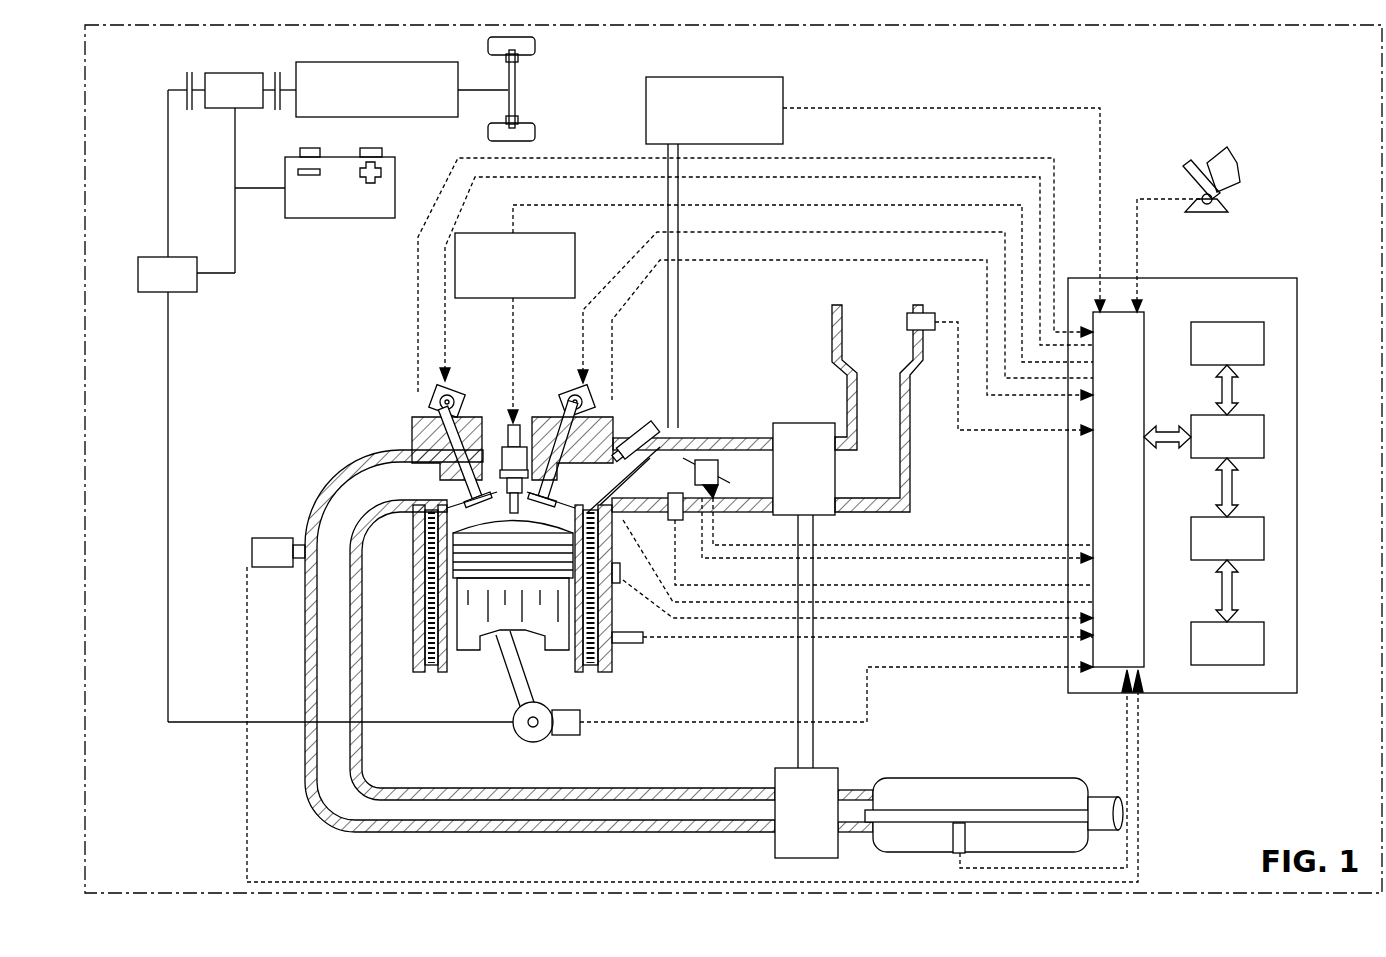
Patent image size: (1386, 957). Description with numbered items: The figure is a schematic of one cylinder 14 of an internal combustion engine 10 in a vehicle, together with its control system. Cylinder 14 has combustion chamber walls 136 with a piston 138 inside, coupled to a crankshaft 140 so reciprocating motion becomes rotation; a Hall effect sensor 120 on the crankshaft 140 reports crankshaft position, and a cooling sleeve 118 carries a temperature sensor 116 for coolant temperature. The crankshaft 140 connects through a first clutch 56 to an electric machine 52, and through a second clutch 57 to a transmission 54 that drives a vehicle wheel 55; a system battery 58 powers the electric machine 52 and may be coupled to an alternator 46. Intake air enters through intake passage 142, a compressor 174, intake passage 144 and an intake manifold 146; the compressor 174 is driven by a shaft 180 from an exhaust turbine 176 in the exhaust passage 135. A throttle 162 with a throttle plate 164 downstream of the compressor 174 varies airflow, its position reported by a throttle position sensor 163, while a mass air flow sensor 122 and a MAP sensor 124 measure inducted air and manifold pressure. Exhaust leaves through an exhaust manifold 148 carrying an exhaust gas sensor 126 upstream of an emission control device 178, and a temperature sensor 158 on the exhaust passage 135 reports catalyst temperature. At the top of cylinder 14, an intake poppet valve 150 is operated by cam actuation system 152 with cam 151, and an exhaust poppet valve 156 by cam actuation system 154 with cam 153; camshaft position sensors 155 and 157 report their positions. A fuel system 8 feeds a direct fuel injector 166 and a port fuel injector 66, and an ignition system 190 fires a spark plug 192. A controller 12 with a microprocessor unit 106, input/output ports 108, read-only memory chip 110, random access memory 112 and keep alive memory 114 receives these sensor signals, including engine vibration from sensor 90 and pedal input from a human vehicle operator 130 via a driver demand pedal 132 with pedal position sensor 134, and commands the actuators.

The fuel system 8 is at (760, 77).
The internal combustion engine 10 is at (338, 371).
The controller 12 is at (1297, 282).
The cylinder 14 is at (420, 535).
The alternator 46 is at (140, 292).
The electric machine 52 is at (222, 73).
The transmission 54 is at (440, 117).
The vehicle wheel 55 is at (488, 46).
The first clutch 56 is at (187, 76).
The second clutch 57 is at (275, 76).
The system battery 58 is at (345, 218).
The port fuel injector 66 is at (640, 432).
The sensor 90 is at (600, 625).
The microprocessor unit 106 is at (1264, 430).
The input/output ports 108 is at (1144, 322).
The read-only memory chip 110 is at (1264, 336).
The random access memory 112 is at (1264, 540).
The keep alive memory 114 is at (1264, 642).
The temperature sensor 116 is at (622, 578).
The cooling sleeve 118 is at (615, 648).
The Hall effect sensor 120 is at (570, 738).
The mass air flow sensor 122 is at (930, 313).
The MAP sensor 124 is at (682, 540).
The exhaust gas sensor 126 is at (252, 545).
The human vehicle operator 130 is at (1240, 172).
The driver demand pedal 132 is at (1190, 172).
The pedal position sensor 134 is at (1220, 199).
The exhaust passage 135 is at (690, 790).
The combustion chamber walls 136 is at (455, 665).
The piston 138 is at (500, 650).
The crankshaft 140 is at (520, 740).
The intake passage 142 is at (877, 408).
The intake passage 144 is at (692, 475).
The intake manifold 146 is at (633, 480).
The exhaust manifold 148 is at (540, 641).
The intake poppet valve 150 is at (520, 462).
The cam 151 is at (568, 392).
The cam actuation system 152 is at (575, 386).
The cam 153 is at (458, 400).
The cam actuation system 154 is at (455, 386).
The camshaft position sensor 155 is at (595, 403).
The exhaust poppet valve 156 is at (428, 440).
The camshaft position sensor 157 is at (430, 395).
The temperature sensor 158 is at (953, 850).
The throttle 162 is at (715, 460).
The throttle position sensor 163 is at (712, 505).
The throttle plate 164 is at (703, 460).
The direct fuel injector 166 is at (580, 496).
The compressor 174 is at (804, 469).
The exhaust turbine 176 is at (806, 813).
The emission control device 178 is at (975, 778).
The shaft 180 is at (815, 740).
The ignition system 190 is at (475, 233).
The spark plug 192 is at (507, 442).